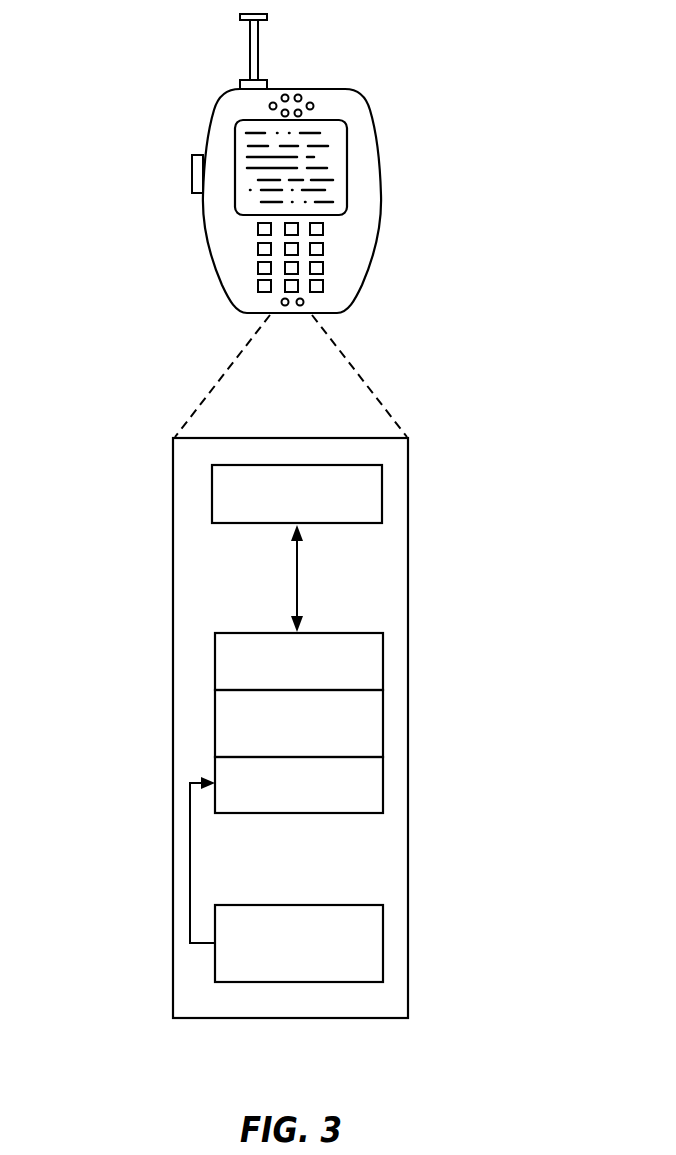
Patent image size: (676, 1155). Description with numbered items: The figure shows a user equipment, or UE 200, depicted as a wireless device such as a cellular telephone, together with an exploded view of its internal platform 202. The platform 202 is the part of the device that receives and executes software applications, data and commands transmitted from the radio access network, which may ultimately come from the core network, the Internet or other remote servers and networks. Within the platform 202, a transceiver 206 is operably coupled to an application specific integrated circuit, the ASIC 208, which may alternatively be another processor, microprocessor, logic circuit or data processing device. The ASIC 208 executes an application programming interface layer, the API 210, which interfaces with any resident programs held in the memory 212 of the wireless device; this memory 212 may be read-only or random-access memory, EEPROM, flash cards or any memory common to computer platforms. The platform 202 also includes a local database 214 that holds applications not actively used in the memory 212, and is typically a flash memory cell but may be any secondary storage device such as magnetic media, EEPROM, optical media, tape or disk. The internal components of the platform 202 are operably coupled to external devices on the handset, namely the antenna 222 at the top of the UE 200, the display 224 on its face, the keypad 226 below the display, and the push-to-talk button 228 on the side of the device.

The UE 200 is at (357, 290).
The platform 202 is at (173, 633).
The transceiver 206 is at (382, 496).
The ASIC 208 is at (383, 670).
The API 210 is at (383, 717).
The memory 212 is at (383, 783).
The local database 214 is at (383, 925).
The antenna 222 is at (258, 31).
The display 224 is at (347, 154).
The keypad 226 is at (323, 249).
The push-to-talk button 228 is at (192, 165).